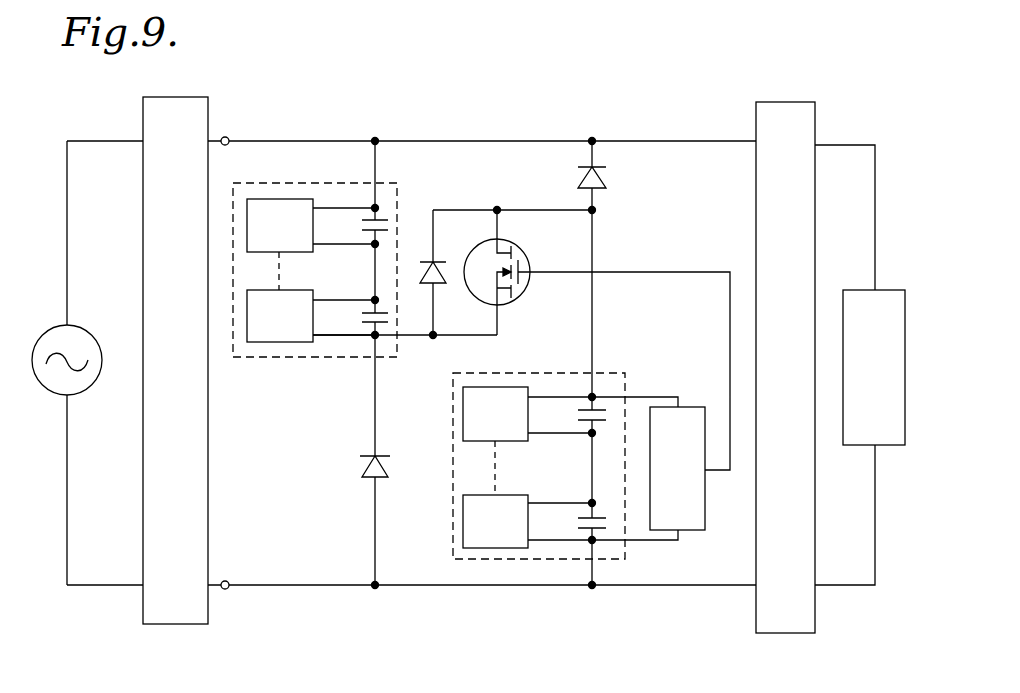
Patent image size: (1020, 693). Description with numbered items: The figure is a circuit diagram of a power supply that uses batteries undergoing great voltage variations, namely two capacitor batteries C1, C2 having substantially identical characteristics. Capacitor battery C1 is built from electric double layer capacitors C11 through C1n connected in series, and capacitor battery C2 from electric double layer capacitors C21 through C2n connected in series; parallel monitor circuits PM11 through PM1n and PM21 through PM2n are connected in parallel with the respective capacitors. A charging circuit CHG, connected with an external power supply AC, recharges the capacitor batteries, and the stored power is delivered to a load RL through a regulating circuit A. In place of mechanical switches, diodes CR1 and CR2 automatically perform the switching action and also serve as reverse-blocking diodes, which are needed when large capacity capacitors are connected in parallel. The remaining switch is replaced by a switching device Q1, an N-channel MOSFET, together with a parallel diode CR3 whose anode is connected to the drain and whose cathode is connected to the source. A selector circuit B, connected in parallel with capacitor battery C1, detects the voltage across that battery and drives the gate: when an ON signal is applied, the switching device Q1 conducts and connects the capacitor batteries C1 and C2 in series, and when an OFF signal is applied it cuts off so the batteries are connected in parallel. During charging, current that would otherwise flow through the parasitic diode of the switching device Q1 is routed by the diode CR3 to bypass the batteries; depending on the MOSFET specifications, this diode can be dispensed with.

The charging circuit CHG is at (146, 101).
The external power supply AC is at (77, 349).
The regulating circuit A is at (798, 102).
The selector circuit B is at (698, 407).
The load RL is at (843, 447).
The capacitor battery C2 is at (315, 363).
The capacitor battery C1 is at (508, 467).
The diode CR1 is at (354, 468).
The diode CR2 is at (620, 363).
The parallel diode CR3 is at (420, 262).
The switching device Q1 is at (512, 272).
The parallel monitor circuit PM21 is at (280, 225).
The parallel monitor circuit PM2n is at (280, 316).
The parallel monitor circuit PM11 is at (495, 414).
The parallel monitor circuit PM1n is at (495, 521).
The electric double layer capacitor C21 is at (350, 226).
The electric double layer capacitor C2n is at (350, 317).
The electric double layer capacitor C11 is at (567, 415).
The electric double layer capacitor C1n is at (567, 521).